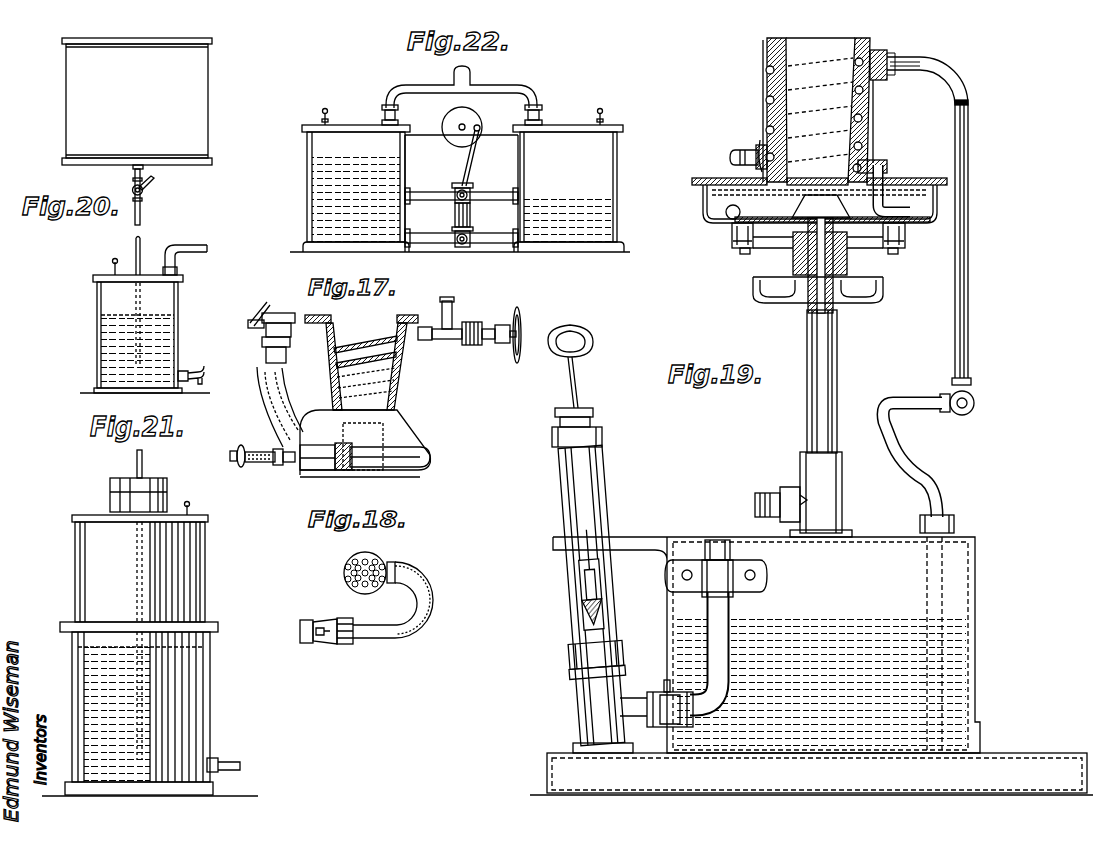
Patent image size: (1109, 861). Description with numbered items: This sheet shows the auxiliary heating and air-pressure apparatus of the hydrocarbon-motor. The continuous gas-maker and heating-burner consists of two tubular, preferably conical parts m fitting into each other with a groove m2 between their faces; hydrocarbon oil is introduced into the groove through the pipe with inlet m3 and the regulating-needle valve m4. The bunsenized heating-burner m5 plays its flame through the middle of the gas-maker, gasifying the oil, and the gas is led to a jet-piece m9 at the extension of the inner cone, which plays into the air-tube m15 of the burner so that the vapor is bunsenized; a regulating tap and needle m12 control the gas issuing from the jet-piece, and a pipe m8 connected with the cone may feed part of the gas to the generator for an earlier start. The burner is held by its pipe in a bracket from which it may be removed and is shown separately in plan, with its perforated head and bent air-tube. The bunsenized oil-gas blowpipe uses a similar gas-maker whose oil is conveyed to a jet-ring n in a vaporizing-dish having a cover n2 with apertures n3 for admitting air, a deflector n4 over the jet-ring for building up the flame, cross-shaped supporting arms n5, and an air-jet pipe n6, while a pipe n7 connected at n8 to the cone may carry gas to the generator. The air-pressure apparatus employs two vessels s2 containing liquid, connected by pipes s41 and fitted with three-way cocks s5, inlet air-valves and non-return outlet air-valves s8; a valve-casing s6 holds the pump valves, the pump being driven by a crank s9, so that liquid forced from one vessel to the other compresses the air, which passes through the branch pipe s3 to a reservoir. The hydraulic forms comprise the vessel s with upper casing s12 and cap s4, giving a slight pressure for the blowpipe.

In FIG. 20, the removable cylinder / tank body s is at (137, 103).
In FIG. 21, the removable cylinder / tank body s is at (205, 668).
In FIG. 20, the vessel s2 is at (180, 312).
In FIG. 21, the vessel s2 is at (77, 568).
In FIG. 22, the vessel s2 is at (307, 143).
In FIG. 20, the branch pipe s3 is at (189, 249).
In FIG. 21, the branch pipe s3 is at (225, 762).
In FIG. 21, the cap s4 is at (160, 482).
In FIG. 21, the three-way suction and delivery cock s5 is at (190, 506).
In FIG. 22, the three-way suction and delivery cock s5 is at (454, 210).
In FIG. 22, the valve-casing s6 is at (471, 215).
In FIG. 22, the non-return outlet air-valve s8 is at (385, 107).
In FIG. 22, the crank s9 is at (480, 126).
In FIG. 21, the upper casing s12 is at (205, 555).
In FIG. 22, the connecting pipe s41 is at (433, 191).
In FIG. 17, the tubular cylindrical part m is at (312, 316).
In FIG. 19, the tubular cylindrical part m is at (778, 40).
In FIG. 17, the groove m2 is at (402, 347).
In FIG. 19, the groove m2 is at (882, 52).
In FIG. 17, the pipe with inlet m3 is at (454, 305).
In FIG. 19, the pipe with inlet m3 is at (933, 582).
In FIG. 17, the regulating-needle valve m4 is at (470, 345).
In FIG. 19, the regulating-needle valve m4 is at (962, 415).
In FIG. 17, the bunsenized heating-burner m5 is at (375, 442).
In FIG. 18, the bunsenized heating-burner m5 is at (425, 582).
In FIG. 17, the pipe m8 is at (292, 314).
In FIG. 17, the jet-piece m9 is at (305, 470).
In FIG. 19, the jet-piece m9 is at (905, 160).
In FIG. 17, the regulating tap and needle m12 is at (275, 465).
In FIG. 17, the air-tube m15 is at (428, 463).
In FIG. 19, the jet-ring n is at (730, 224).
In FIG. 19, the cover n2 is at (702, 178).
In FIG. 19, the aperture n3 is at (720, 180).
In FIG. 19, the deflector n4 is at (725, 212).
In FIG. 19, the cross-shaped arms n5 is at (862, 248).
In FIG. 19, the air-jet pipe n6 is at (837, 375).
In FIG. 19, the pipe n7 is at (745, 150).
In FIG. 19, the connection n8 is at (768, 137).